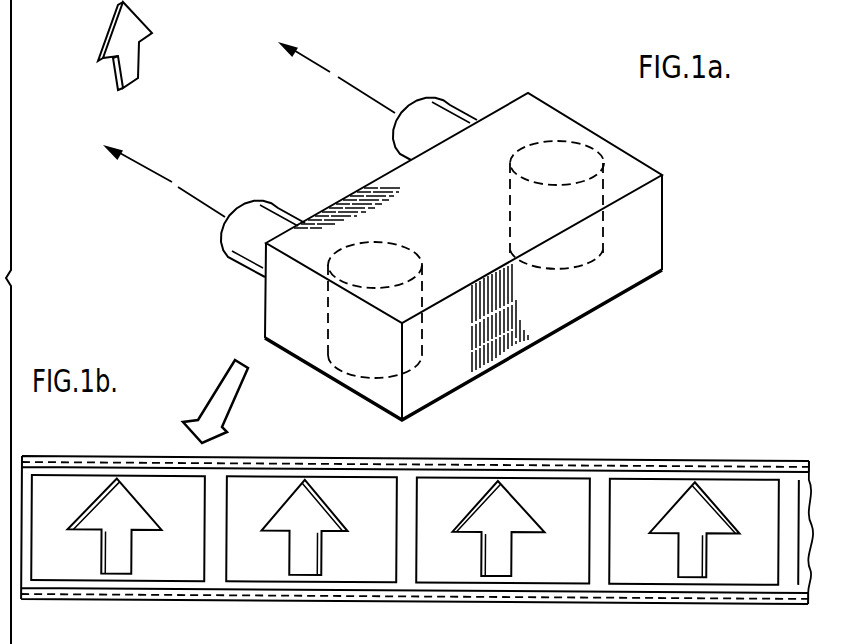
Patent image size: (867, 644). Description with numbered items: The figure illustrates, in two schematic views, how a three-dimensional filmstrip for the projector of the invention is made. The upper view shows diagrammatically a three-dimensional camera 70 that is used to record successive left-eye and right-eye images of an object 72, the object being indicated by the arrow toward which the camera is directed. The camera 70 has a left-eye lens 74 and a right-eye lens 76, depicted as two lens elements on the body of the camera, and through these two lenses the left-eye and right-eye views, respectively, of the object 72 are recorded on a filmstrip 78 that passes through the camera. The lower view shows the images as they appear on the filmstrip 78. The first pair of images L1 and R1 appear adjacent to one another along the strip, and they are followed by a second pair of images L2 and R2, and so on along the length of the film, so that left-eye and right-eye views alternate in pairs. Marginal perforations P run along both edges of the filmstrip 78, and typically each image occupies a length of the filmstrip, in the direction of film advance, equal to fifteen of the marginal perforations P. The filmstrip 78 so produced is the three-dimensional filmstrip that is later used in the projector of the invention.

In FIG. 1A, the 3-D camera 70 is at (674, 220).
In FIG. 1A, the object 72 is at (166, 11).
In FIG. 1A, the left-eye lens 74 is at (276, 214).
In FIG. 1A, the right-eye lens 76 is at (449, 118).
In FIG. 1A, the filmstrip 78 is at (496, 167).
In FIG. 1B, the filmstrip 78 is at (600, 487).
In FIG. 1B, the marginal perforations P is at (123, 460).
In FIG. 1B, the first left-eye image L1 is at (114, 622).
In FIG. 1B, the first right-eye image R1 is at (304, 624).
In FIG. 1B, the second left-eye image L2 is at (501, 624).
In FIG. 1B, the second right-eye image R2 is at (700, 624).